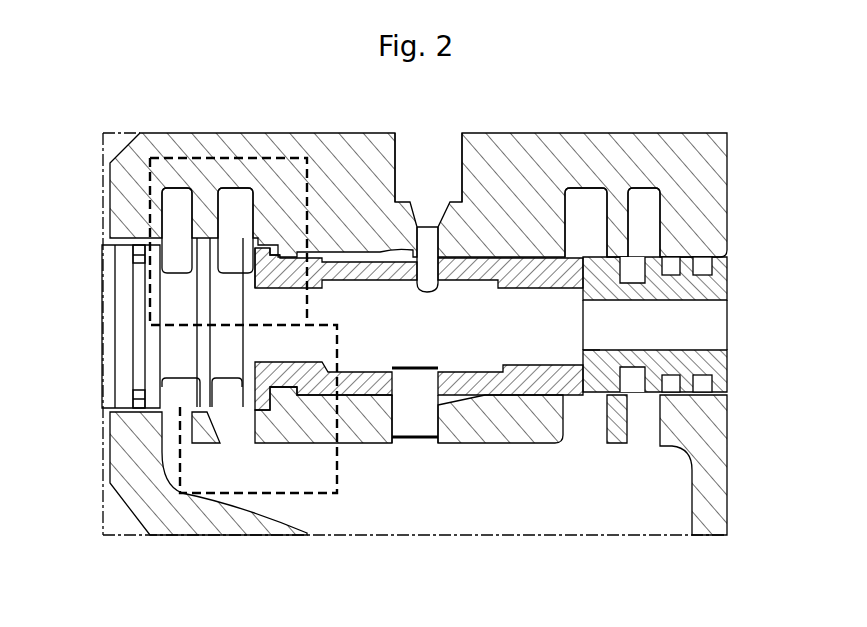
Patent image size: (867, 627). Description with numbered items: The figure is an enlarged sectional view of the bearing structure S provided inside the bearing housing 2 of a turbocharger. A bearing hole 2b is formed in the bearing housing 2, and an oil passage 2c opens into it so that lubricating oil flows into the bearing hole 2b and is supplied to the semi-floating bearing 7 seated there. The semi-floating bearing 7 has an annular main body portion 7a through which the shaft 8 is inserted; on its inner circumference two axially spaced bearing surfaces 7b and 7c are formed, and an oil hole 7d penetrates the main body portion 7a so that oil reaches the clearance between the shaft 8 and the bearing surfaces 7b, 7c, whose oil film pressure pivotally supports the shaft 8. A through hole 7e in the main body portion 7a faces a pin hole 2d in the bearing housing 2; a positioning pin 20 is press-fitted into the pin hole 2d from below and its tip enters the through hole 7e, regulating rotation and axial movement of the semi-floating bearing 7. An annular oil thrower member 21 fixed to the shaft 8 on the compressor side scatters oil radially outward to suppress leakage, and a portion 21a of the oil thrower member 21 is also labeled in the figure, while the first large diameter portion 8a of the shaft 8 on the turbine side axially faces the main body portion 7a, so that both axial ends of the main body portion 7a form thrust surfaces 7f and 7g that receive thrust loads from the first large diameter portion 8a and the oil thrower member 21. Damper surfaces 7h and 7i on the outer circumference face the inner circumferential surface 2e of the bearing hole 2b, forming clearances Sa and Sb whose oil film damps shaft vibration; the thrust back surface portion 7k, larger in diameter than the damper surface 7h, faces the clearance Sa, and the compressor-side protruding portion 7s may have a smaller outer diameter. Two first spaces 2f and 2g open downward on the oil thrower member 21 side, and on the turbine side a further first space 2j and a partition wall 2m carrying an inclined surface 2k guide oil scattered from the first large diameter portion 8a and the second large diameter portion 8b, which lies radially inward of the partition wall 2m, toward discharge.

The bearing structure S is at (106, 66).
The bearing housing 2 is at (120, 492).
The bearing hole 2b is at (367, 255).
The oil passage 2c is at (462, 180).
The pin hole 2d is at (403, 443).
The inner circumferential surface of the bearing hole 2e is at (390, 250).
The first space 2f is at (596, 220).
The first space 2g is at (658, 220).
The first space 2j is at (190, 220).
The inclined surface 2k is at (218, 225).
The partition wall 2m is at (195, 240).
The semi-floating bearing 7 is at (540, 253).
The main body portion 7a is at (498, 255).
The bearing surface 7b is at (281, 362).
The bearing surface 7c is at (585, 300).
The oil hole 7d is at (426, 270).
The through hole 7e is at (445, 407).
The thrust surface 7f is at (260, 266).
The thrust surface 7g is at (585, 353).
The damper surface 7h is at (303, 362).
The damper surface 7i is at (530, 395).
The thrust back surface portion 7k is at (280, 252).
The protruding portion 7s is at (580, 395).
The shaft 8 is at (422, 337).
The first large diameter portion 8a is at (250, 347).
The second large diameter portion 8b is at (205, 380).
The positioning pin 20 is at (420, 425).
The oil thrower member 21 is at (728, 378).
The sleeve flange 21a is at (727, 293).
The clearance Sa is at (327, 250).
The clearance Sb is at (536, 250).